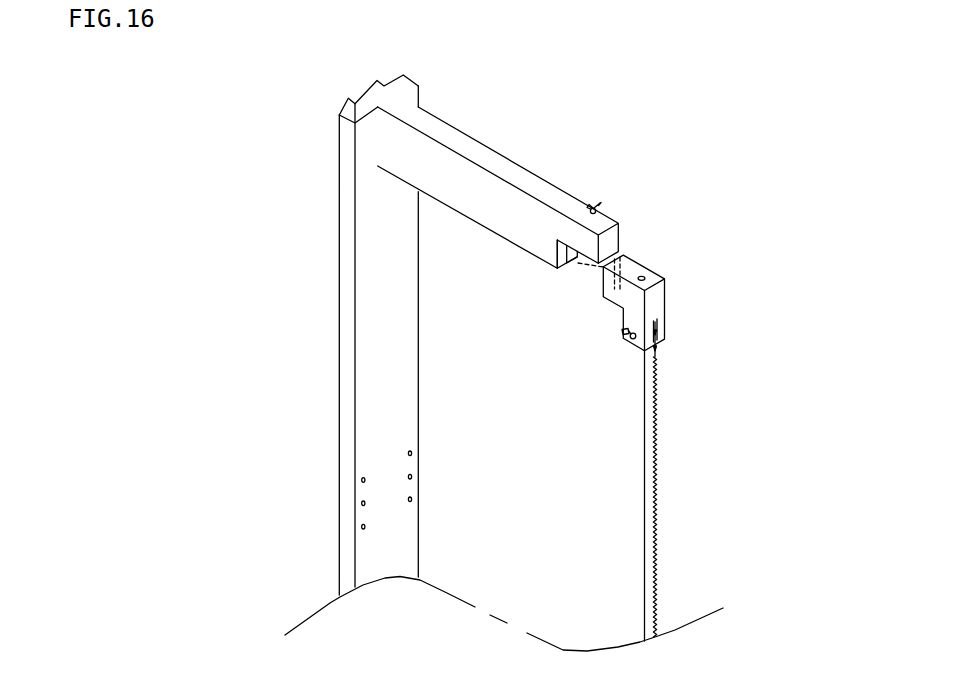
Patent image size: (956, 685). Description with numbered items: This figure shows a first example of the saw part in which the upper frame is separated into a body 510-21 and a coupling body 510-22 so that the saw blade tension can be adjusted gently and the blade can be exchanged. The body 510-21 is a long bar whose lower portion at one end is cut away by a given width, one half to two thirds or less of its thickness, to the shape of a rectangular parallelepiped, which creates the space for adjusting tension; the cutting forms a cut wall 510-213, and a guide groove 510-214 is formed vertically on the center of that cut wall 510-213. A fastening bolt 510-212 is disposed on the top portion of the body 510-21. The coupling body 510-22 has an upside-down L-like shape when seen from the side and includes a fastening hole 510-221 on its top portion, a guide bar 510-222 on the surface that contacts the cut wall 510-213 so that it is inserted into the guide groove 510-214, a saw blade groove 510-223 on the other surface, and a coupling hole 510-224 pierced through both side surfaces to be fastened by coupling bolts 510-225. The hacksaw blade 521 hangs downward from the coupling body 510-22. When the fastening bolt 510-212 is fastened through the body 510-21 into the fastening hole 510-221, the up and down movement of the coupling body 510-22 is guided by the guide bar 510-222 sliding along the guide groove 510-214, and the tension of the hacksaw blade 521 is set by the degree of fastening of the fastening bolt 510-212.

The body 510-21 is at (447, 137).
The fastening bolt 510-212 is at (594, 207).
The cut wall 510-213 is at (558, 268).
The guide groove 510-214 is at (572, 265).
The coupling body 510-22 is at (634, 263).
The fastening hole 510-221 is at (645, 278).
The guide bar 510-222 is at (618, 257).
The saw blade groove 510-223 is at (657, 322).
The coupling hole 510-224 is at (656, 351).
The coupling bolt 510-225 is at (623, 332).
The hacksaw blade 521 is at (654, 482).